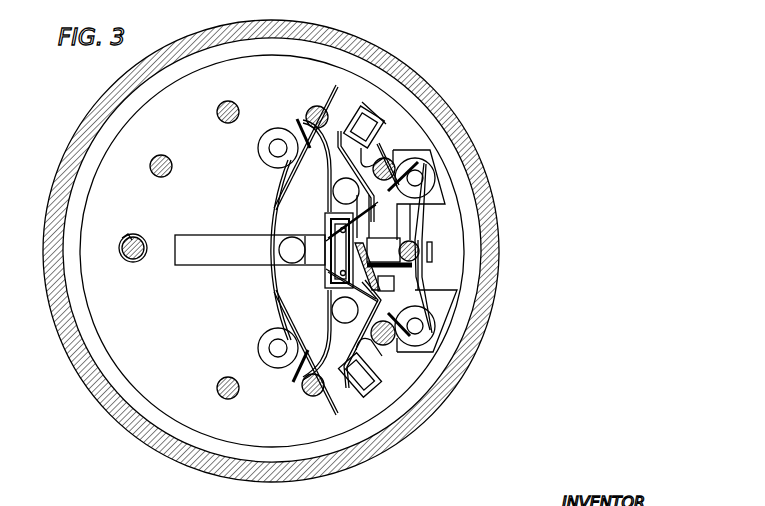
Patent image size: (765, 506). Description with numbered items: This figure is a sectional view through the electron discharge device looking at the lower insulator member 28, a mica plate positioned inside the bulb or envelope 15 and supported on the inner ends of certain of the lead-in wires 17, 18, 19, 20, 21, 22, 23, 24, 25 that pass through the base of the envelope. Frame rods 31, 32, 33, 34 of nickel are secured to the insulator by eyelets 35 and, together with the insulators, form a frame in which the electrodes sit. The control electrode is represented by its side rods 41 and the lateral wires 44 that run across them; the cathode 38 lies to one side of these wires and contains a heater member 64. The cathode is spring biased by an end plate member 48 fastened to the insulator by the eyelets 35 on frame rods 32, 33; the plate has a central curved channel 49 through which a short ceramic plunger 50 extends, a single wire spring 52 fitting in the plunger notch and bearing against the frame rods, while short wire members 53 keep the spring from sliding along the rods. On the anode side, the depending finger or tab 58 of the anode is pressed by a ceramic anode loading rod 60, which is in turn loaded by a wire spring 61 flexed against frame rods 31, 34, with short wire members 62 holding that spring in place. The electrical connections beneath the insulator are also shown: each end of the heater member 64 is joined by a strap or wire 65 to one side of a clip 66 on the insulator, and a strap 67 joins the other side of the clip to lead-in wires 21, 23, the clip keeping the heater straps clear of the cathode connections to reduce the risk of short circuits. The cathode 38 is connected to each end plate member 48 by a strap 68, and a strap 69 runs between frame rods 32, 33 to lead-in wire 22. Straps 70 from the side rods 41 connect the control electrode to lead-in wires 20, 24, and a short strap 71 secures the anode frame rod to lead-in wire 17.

The bulb or envelope 15 is at (410, 70).
The lead-in wire 17 is at (139, 263).
The lead-in wire 18 is at (170, 137).
The lead-in wire 19 is at (232, 100).
The lead-in wire 20 is at (320, 107).
The lead-in wire 21 is at (393, 153).
The lead-in wire 22 is at (421, 252).
The lead-in wire 23 is at (388, 346).
The lead-in wire 24 is at (307, 396).
The lead-in wire 25 is at (227, 399).
The lower insulator member 28 is at (125, 367).
The frame rod 31 is at (269, 148).
The frame rod 32 is at (426, 176).
The frame rod 33 is at (425, 328).
The frame rod 34 is at (264, 332).
The eyelet 35 is at (266, 162).
The cathode 38 is at (340, 250).
The side rod 41 is at (341, 186).
The lateral wire 44 is at (272, 257).
The end plate member 48 is at (445, 299).
The central curved channel 49 is at (394, 238).
The ceramic plunger 50 is at (432, 248).
The wire spring 52 is at (440, 291).
The short wire member 53 is at (421, 160).
The depending finger or tab 58 is at (308, 234).
The anode loading rod 60 is at (292, 240).
The wire spring 61 is at (271, 269).
The short wire member 62 is at (282, 368).
The heater member 64 is at (271, 248).
The strap or wire 65 is at (446, 210).
The clip 66 is at (368, 116).
The strap 67 is at (386, 126).
The strap 68 is at (365, 255).
The strap 69 is at (446, 268).
The strap 70 is at (323, 128).
The short strap 71 is at (125, 244).